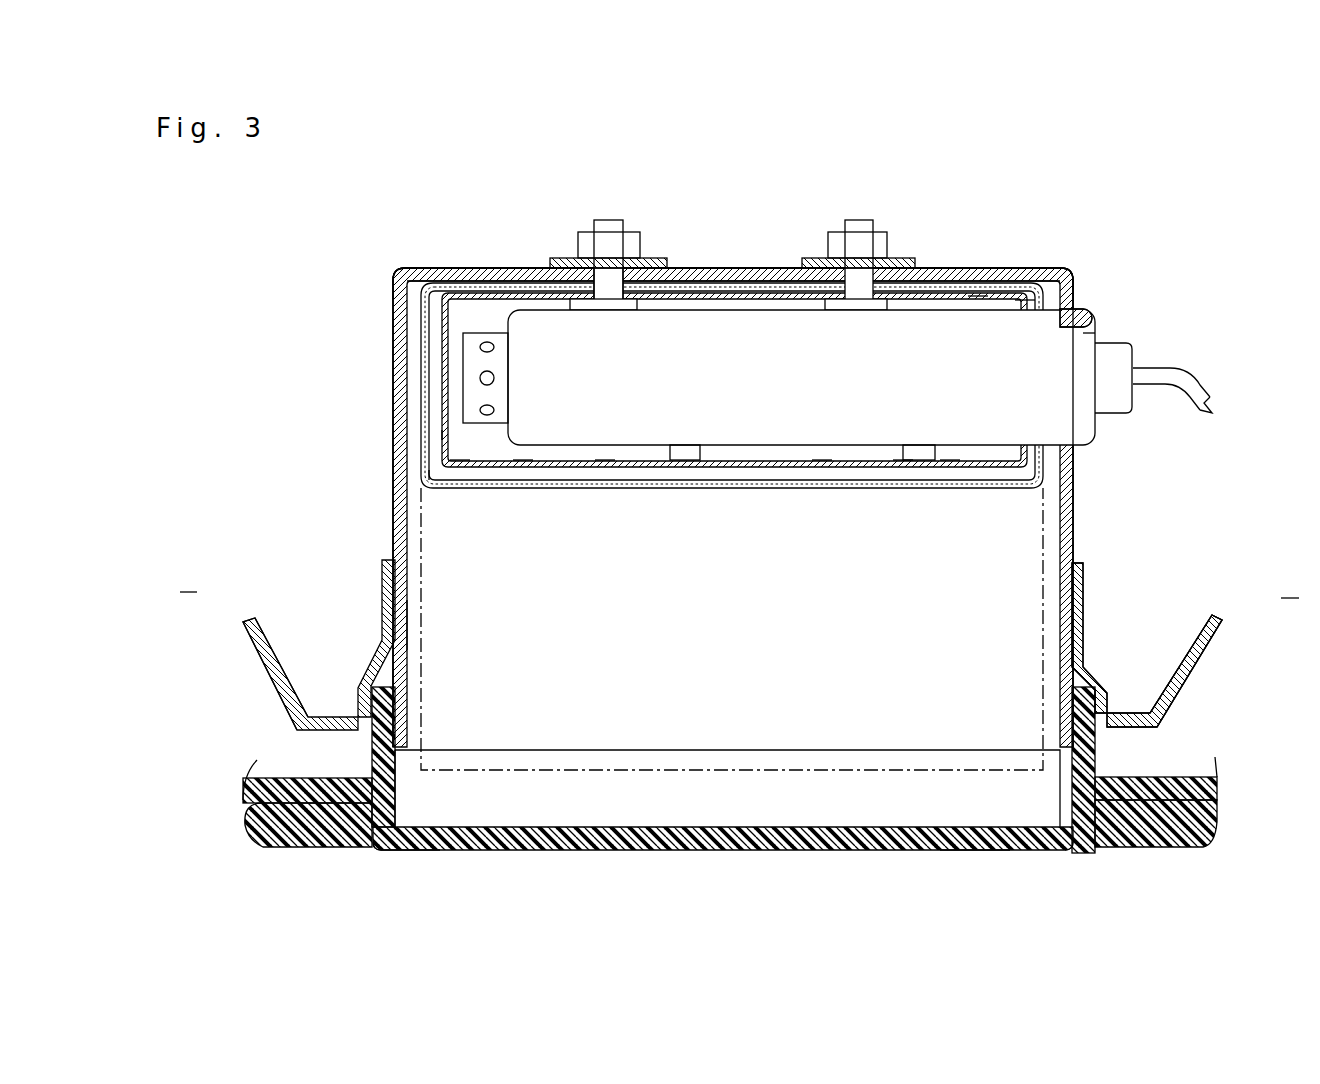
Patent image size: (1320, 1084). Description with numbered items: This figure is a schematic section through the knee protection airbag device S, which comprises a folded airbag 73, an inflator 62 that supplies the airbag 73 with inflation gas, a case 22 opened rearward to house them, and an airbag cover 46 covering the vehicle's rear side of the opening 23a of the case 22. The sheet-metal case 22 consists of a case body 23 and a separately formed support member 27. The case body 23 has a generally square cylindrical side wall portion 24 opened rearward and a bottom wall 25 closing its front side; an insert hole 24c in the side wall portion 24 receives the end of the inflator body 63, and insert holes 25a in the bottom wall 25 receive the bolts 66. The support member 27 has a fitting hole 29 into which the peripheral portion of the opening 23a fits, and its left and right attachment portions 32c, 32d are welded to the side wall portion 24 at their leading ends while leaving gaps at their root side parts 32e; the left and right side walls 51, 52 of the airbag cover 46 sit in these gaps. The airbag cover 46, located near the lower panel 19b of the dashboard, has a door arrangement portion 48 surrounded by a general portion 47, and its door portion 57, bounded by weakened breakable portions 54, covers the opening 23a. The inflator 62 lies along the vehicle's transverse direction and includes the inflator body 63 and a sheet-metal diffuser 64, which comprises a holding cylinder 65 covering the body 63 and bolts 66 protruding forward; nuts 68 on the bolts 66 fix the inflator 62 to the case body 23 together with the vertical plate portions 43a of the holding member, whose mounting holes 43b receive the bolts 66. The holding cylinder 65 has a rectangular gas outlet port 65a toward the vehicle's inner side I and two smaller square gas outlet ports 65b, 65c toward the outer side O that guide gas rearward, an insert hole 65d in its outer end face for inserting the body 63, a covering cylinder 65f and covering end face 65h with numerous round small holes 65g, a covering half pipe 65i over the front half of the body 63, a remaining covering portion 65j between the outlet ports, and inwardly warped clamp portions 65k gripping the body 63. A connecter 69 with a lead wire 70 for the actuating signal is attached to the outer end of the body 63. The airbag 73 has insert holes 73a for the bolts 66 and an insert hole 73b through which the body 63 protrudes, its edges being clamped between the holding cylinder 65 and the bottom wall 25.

The case 22 is at (768, 554).
The case body 23 is at (743, 554).
The opening 23a is at (625, 740).
The side wall portion 24 is at (397, 522).
The insert hole 24c is at (1093, 325).
The bottom wall 25 is at (468, 268).
The insert holes 25a is at (612, 285).
The support member 27 is at (1152, 635).
The fitting hole 29 is at (408, 623).
The left portion of attachment portion 32c is at (382, 585).
The right portion of attachment portion 32d is at (1085, 603).
The root side part 32e is at (363, 677).
The vertical plate portion 43a is at (552, 262).
The mounting hole 43b is at (580, 262).
The airbag cover 46 is at (976, 872).
The general portion 47 is at (290, 782).
The door arrangement portion 48 is at (444, 860).
The left side wall 51 is at (382, 760).
The right side wall 52 is at (1083, 753).
The weakened breakable portions 54 is at (1073, 852).
The door portion 57 is at (790, 848).
The inflator 62 is at (732, 457).
The inflator body 63 is at (673, 570).
The diffuser 64 is at (736, 481).
The holding cylinder 65 is at (752, 300).
The gas outlet port 65a is at (605, 464).
The gas outlet port 65b is at (822, 467).
The gas outlet port 65c is at (950, 467).
The insert hole 65d is at (1025, 305).
The covering cylinder 65f is at (523, 464).
The small holes 65g is at (447, 435).
The covering end face 65h is at (463, 345).
The covering half pipe 65i is at (978, 292).
The remaining covering portion 65j is at (903, 468).
The clamp portions 65k is at (685, 447).
The bolts 66 is at (608, 225).
The nuts 68 is at (637, 245).
The connecter 69 is at (1122, 402).
The lead wire 70 is at (1192, 387).
The airbag 73 is at (460, 467).
The insert holes 73a is at (863, 295).
The insert hole 73b is at (1097, 334).
The lower panel 19b is at (305, 845).
The knee protection airbag device S is at (1175, 262).
The vehicle's inner side I is at (188, 578).
The vehicle's outer side O is at (1290, 581).